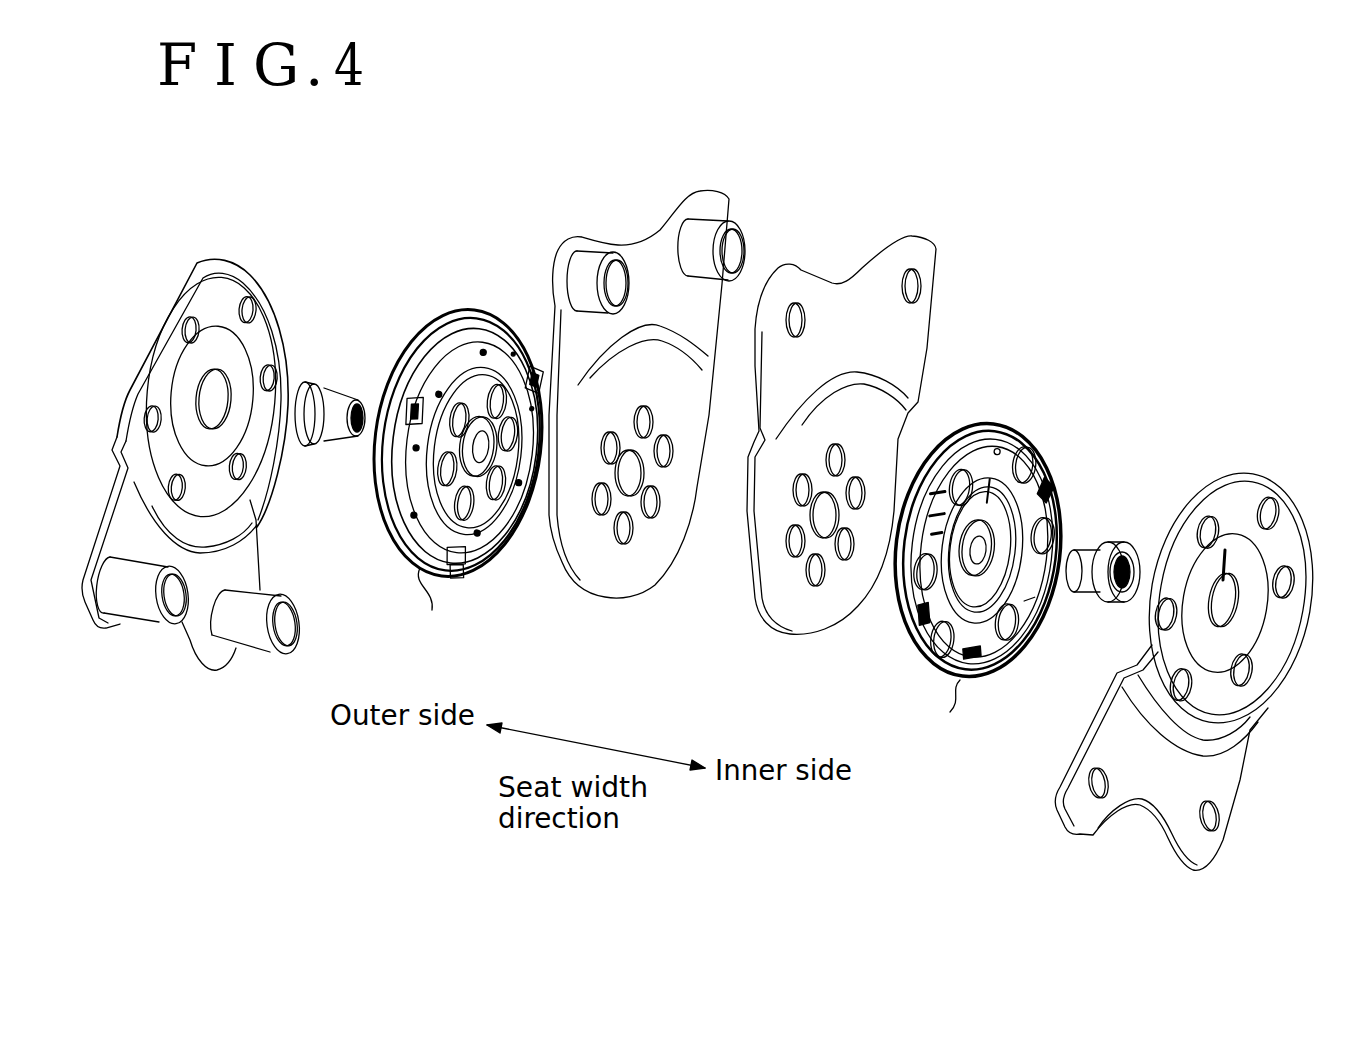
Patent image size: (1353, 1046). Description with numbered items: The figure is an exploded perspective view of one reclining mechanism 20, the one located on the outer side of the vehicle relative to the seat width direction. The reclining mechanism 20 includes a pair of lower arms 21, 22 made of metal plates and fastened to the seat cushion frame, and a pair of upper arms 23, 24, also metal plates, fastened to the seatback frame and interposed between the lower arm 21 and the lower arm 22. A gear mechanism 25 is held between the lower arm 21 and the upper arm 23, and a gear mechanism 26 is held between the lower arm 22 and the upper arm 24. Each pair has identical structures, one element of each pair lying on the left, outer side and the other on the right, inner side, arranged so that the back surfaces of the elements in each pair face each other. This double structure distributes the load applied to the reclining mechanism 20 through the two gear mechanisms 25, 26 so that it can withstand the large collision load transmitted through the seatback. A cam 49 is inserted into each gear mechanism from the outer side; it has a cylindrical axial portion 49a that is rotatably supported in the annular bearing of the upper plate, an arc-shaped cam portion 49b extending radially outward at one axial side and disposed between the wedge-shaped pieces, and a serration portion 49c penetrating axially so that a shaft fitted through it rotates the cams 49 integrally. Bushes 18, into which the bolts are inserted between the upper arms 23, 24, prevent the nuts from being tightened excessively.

The bush 18 is at (589, 258).
The reclining mechanism 20 is at (1062, 305).
The lower arm 21 is at (254, 306).
The lower arm 22 is at (1254, 474).
The upper arm 23 is at (647, 408).
The upper arm 24 is at (805, 636).
The gear mechanism 25 is at (425, 575).
The gear mechanism 26 is at (960, 682).
The cam 49 is at (730, 494).
The axial portion 49a is at (342, 402).
The cam portion 49b is at (322, 384).
The serration portion 49c is at (356, 454).